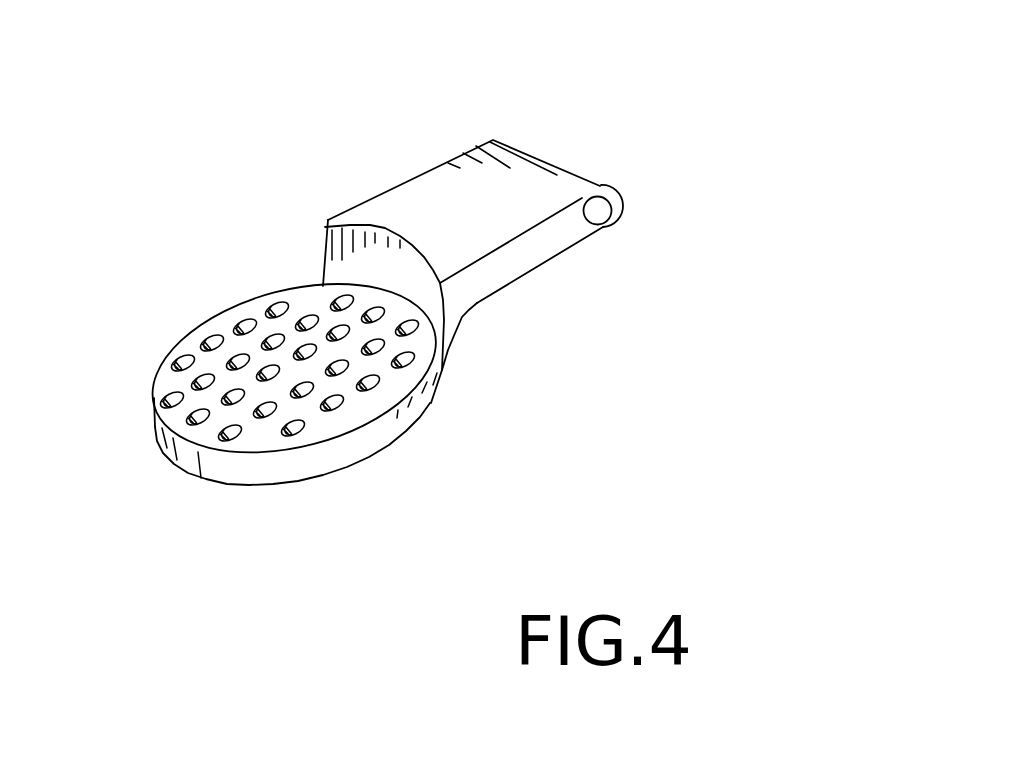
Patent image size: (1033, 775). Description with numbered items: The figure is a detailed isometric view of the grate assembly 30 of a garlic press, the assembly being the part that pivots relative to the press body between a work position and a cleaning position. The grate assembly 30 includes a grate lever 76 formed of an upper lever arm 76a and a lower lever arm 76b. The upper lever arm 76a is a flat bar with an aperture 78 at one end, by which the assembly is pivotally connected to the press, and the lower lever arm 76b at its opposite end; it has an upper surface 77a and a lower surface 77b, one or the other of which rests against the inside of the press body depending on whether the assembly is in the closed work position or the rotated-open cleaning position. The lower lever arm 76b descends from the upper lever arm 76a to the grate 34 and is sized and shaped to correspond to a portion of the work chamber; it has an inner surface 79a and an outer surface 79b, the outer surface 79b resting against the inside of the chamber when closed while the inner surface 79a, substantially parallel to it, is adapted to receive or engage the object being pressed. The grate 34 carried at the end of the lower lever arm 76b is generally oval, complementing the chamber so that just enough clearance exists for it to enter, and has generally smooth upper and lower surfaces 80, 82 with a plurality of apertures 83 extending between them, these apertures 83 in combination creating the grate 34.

The grate assembly 30 is at (140, 140).
The grate 34 is at (129, 352).
The grate lever 76 is at (529, 275).
The upper lever arm 76a is at (537, 187).
The lower lever arm 76b is at (431, 403).
The upper surface 77a is at (422, 202).
The lower surface 77b is at (553, 263).
The aperture 78 is at (607, 222).
The inner surface 79a is at (313, 243).
The outer surface 79b is at (465, 327).
The upper surface 80 is at (270, 440).
The lower surface 82 is at (335, 468).
The apertures 83 is at (198, 416).